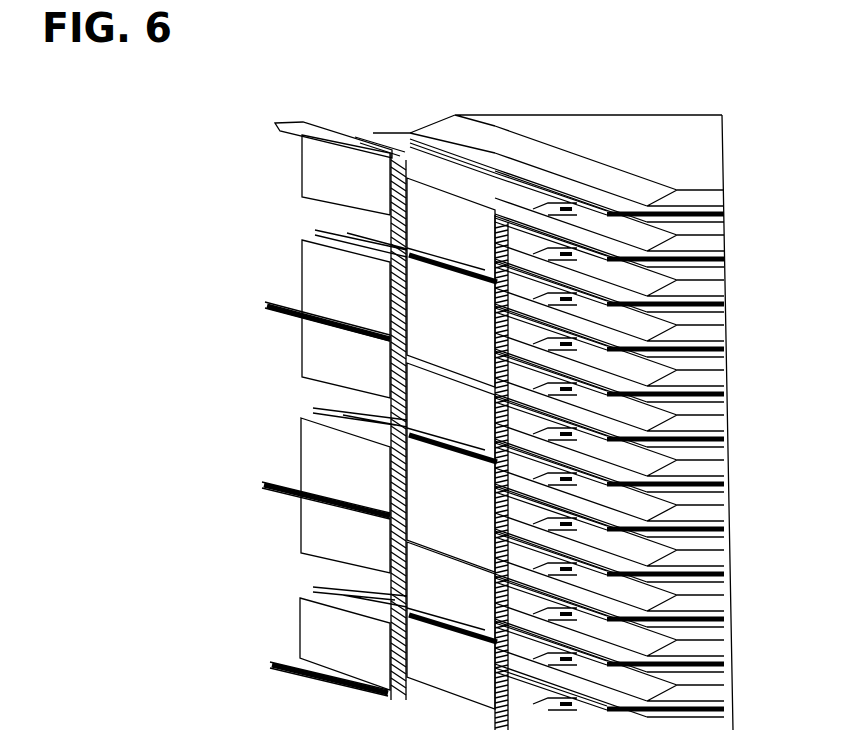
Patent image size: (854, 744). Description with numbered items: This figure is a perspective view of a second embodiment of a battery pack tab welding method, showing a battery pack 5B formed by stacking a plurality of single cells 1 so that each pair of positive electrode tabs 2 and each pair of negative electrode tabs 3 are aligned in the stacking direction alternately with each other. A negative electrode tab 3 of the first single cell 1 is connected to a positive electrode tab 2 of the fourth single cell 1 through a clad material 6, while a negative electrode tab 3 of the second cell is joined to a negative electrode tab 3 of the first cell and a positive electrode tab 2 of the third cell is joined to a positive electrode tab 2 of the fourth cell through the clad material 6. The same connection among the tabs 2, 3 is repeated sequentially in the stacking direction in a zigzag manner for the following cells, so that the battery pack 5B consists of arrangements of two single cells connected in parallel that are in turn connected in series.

The single cell 1 is at (666, 128).
The positive electrode tab 2 is at (370, 133).
The negative electrode tab 3 is at (380, 237).
The clad material 6 is at (265, 303).
The battery pack 5B is at (275, 123).